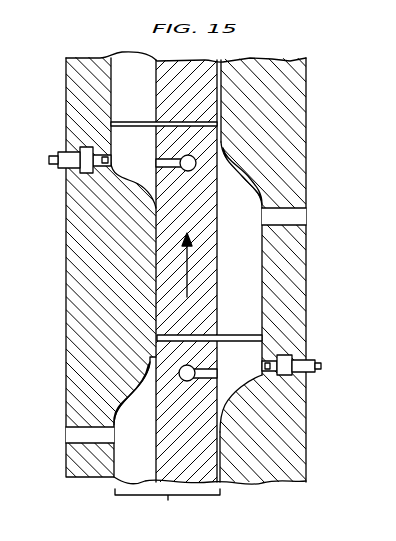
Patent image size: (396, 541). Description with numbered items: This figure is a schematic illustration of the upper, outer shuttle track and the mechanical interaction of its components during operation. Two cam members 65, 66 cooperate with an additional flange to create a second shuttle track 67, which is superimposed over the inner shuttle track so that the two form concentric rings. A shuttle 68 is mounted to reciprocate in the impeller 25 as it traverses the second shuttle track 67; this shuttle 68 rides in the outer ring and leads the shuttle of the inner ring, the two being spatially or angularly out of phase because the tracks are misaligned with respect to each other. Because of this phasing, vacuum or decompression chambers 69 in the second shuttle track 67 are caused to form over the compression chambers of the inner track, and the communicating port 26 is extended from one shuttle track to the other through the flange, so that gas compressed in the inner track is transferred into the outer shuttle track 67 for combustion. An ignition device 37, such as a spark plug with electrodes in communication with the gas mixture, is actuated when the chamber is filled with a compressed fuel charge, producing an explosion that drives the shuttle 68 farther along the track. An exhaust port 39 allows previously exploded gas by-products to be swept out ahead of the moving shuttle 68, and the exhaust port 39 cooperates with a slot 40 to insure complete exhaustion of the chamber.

The impeller 25 is at (170, 82).
The communicating port 26 is at (197, 168).
The ignition device 37 is at (62, 156).
The exhaust port 39 is at (295, 218).
The slot 40 is at (253, 187).
The cam member 65 is at (116, 284).
The cam member 66 is at (293, 120).
The second shuttle track 67 is at (167, 505).
The shuttle 68 is at (139, 123).
The vacuum or decompression chamber 69 is at (140, 166).